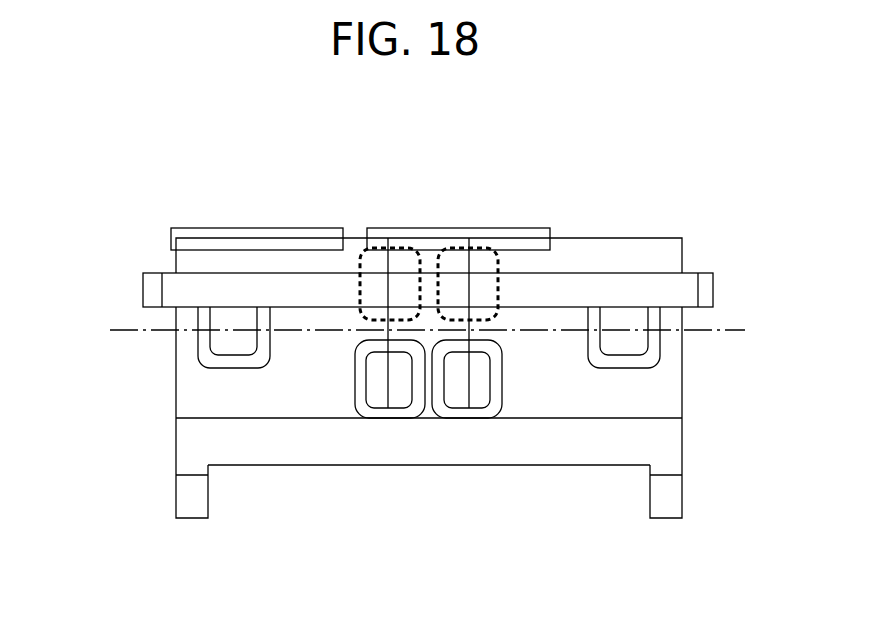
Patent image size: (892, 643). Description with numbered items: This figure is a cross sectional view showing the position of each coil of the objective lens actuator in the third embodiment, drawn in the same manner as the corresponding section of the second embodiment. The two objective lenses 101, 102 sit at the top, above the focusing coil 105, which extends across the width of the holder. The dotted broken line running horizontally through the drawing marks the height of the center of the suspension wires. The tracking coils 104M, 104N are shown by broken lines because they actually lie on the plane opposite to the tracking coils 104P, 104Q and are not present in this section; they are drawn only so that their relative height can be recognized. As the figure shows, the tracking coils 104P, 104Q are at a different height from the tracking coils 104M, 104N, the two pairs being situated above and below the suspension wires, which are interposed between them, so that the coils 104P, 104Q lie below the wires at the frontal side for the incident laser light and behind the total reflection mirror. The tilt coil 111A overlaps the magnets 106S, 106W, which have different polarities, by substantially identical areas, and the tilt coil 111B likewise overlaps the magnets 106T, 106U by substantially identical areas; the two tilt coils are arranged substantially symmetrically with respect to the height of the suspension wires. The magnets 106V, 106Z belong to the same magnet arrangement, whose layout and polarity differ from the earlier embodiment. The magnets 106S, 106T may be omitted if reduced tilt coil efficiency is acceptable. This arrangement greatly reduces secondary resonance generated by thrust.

The objective lens 101 is at (250, 237).
The objective lens 102 is at (447, 233).
The tracking coil 104M is at (365, 252).
The tracking coil 104N is at (498, 265).
The tracking coil 104P is at (467, 415).
The tracking coil 104Q is at (377, 415).
The focusing coil 105 is at (622, 297).
The magnet 106S is at (673, 252).
The magnet 106T is at (188, 263).
The magnet 106U is at (277, 403).
The magnet 106V is at (430, 415).
The magnet 106W is at (612, 405).
The magnet 106Z is at (538, 450).
The tilt coil 111A is at (650, 360).
The tilt coil 111B is at (214, 362).